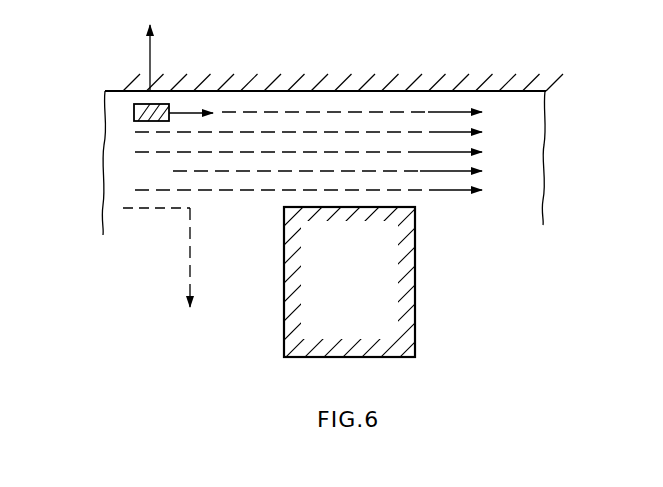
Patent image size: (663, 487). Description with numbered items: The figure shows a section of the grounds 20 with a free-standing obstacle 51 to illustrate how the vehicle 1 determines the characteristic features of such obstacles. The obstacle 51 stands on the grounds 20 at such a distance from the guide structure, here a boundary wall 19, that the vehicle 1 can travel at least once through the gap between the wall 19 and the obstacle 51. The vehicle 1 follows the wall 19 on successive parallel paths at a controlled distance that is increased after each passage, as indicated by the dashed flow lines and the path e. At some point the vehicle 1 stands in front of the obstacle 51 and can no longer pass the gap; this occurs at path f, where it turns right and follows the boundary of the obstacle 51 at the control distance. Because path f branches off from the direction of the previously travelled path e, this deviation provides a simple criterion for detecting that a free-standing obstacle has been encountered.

The vehicle 1 is at (134, 113).
The boundary wall 19 is at (333, 91).
The grounds 20 is at (478, 328).
The free standing obstacle 51 is at (358, 254).